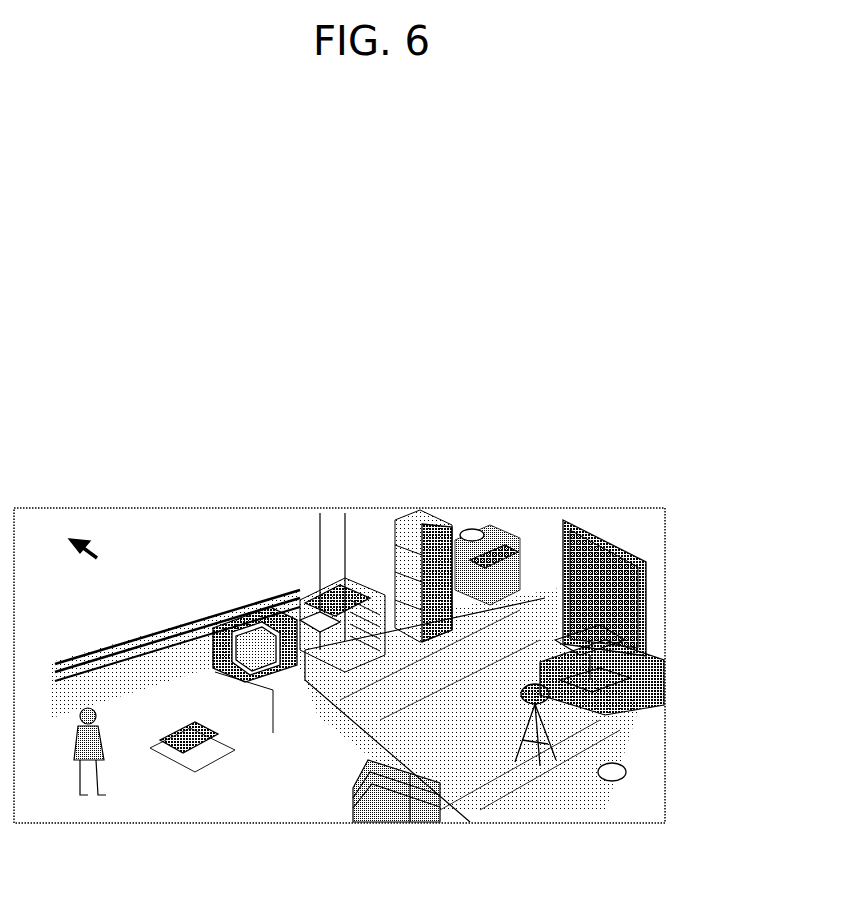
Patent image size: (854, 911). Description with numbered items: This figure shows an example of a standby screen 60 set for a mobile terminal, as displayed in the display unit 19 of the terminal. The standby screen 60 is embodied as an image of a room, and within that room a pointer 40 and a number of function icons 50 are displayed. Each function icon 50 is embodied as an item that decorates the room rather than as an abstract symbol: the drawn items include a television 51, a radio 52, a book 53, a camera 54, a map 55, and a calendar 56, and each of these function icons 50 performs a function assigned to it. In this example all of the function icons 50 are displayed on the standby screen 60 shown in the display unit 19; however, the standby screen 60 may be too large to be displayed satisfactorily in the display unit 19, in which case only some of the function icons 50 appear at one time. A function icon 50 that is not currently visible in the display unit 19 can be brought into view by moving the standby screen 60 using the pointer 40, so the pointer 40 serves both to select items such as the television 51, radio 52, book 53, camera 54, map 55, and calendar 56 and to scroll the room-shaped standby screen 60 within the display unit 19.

The display unit 19 is at (647, 418).
The pointer 40 is at (83, 537).
The function icon 50 is at (312, 803).
The television 51 is at (278, 597).
The radio 52 is at (206, 755).
The book 53 is at (342, 580).
The camera 54 is at (565, 706).
The map 55 is at (628, 586).
The calendar 56 is at (626, 768).
The standby screen 60 is at (540, 500).